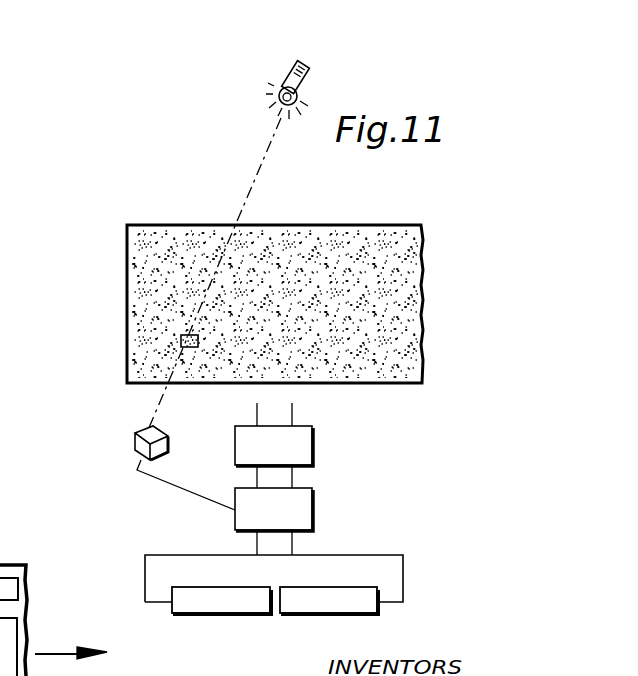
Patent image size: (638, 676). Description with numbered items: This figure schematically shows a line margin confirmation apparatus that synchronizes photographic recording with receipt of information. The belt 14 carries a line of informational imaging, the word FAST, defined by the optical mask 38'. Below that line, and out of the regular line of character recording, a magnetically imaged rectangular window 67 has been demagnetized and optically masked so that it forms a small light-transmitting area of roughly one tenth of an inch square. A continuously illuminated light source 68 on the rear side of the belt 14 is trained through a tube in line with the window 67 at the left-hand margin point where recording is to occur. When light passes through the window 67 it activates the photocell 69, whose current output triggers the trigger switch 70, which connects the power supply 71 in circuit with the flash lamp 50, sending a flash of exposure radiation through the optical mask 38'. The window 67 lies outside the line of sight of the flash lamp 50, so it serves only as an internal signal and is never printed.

The belt 14 is at (305, 226).
The optical mask 38' is at (286, 285).
The flash lamp 50 is at (172, 613).
The rectangular window 67 is at (181, 341).
The light source 68 is at (290, 73).
The photocell 69 is at (135, 440).
The trigger switch 70 is at (300, 503).
The power supply 71 is at (300, 445).